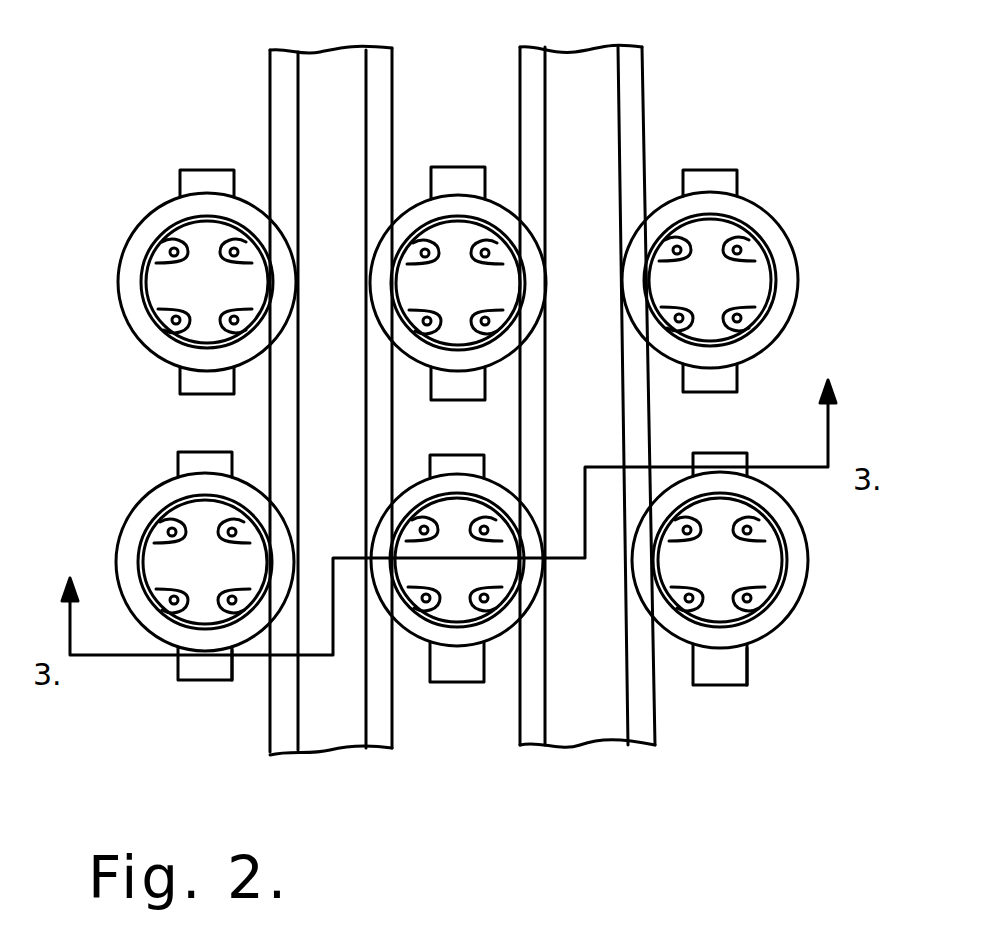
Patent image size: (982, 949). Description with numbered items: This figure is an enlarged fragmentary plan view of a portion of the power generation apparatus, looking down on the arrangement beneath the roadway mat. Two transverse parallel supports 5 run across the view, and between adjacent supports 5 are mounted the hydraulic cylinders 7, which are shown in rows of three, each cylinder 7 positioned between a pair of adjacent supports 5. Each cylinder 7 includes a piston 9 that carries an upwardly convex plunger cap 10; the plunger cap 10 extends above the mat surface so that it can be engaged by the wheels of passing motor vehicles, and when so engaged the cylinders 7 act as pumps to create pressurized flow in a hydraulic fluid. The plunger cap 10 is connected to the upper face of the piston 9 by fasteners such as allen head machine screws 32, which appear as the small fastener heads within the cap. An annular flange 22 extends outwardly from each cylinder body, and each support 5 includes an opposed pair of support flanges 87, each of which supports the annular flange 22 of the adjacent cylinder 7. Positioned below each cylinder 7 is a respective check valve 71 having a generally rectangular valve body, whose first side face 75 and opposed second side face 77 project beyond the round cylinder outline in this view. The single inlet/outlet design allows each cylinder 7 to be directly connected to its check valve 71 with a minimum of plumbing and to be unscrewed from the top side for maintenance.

The transverse parallel support 5 is at (334, 50).
The support flange 87 is at (520, 128).
The check valve 71 is at (737, 160).
The annular flange 22 is at (756, 258).
The allen head machine screw 32 is at (775, 281).
The plunger cap 10 is at (751, 288).
The piston 9 is at (143, 497).
The hydraulic cylinder 7 is at (815, 575).
The first side face 75 is at (180, 663).
The second side face 77 is at (236, 665).